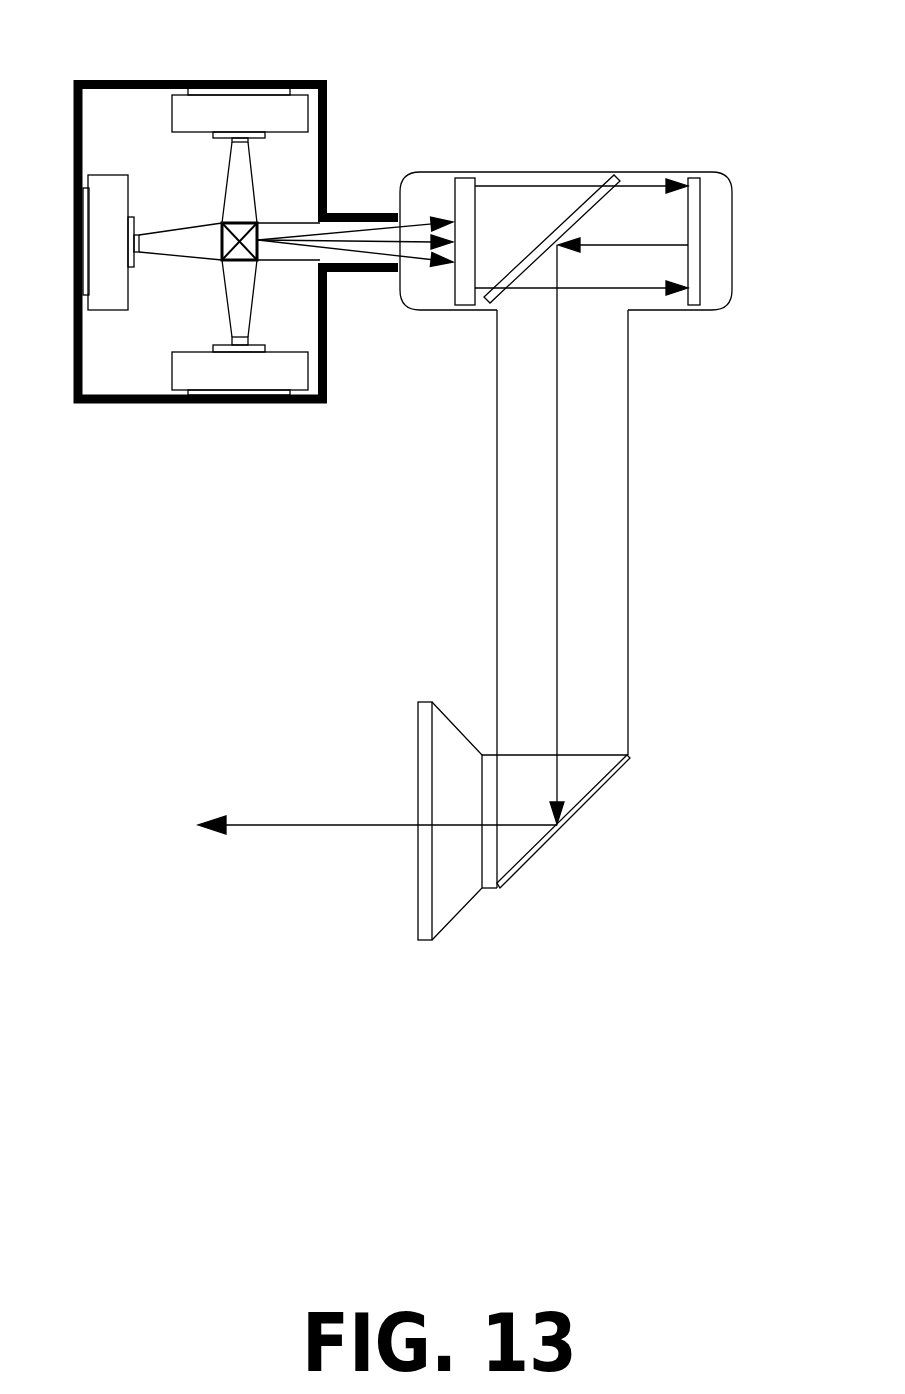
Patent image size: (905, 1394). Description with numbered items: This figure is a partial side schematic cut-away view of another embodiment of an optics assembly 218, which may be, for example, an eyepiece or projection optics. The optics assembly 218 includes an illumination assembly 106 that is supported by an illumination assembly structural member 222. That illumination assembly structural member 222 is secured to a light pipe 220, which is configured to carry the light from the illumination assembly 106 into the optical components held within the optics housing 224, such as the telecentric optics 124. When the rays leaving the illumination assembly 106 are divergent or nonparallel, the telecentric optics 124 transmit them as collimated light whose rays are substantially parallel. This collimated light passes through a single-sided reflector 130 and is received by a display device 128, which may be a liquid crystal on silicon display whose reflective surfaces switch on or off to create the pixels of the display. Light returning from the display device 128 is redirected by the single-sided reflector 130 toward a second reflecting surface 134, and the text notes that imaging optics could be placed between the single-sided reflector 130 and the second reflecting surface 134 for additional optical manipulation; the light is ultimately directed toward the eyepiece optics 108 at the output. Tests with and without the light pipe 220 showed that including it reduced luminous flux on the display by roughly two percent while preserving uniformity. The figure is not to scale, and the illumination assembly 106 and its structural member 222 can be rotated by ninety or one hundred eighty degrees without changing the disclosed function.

The illumination assembly 106 is at (122, 370).
The eyepiece lens assembly 108 is at (452, 740).
The telecentric optics 124 is at (470, 192).
The display device 128 is at (690, 180).
The single-sided reflector 130 is at (607, 173).
The second reflecting surface 134 is at (587, 802).
The optics assembly 218 is at (607, 58).
The light pipe 220 is at (340, 210).
The illumination assembly structural member 222 is at (148, 80).
The optics housing 224 is at (631, 470).